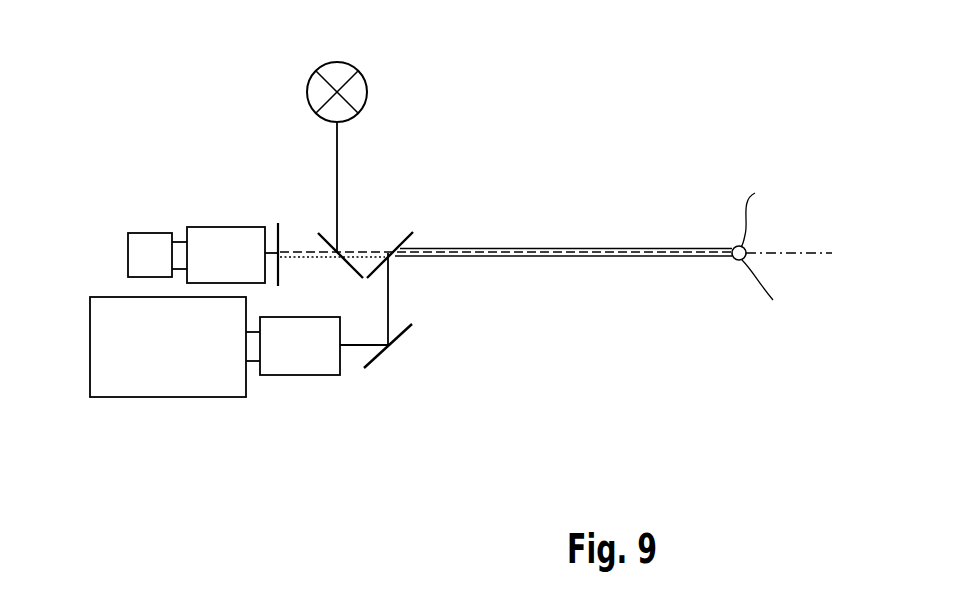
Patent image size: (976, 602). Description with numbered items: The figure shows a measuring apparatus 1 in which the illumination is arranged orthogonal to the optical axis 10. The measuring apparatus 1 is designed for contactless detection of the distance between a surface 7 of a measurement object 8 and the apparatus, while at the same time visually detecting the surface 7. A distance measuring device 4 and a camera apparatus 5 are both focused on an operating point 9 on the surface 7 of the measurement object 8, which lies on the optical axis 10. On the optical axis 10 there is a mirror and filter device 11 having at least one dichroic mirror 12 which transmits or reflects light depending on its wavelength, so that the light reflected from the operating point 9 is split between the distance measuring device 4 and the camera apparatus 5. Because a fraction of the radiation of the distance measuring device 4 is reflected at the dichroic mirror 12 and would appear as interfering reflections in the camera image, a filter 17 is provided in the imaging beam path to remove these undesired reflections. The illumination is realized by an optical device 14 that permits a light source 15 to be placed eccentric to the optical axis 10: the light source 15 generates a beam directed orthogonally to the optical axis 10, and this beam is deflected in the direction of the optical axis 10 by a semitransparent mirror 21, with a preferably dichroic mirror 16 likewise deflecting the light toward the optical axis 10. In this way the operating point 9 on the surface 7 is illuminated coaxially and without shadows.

The measuring apparatus 1 is at (77, 137).
The distance measuring device 4 is at (157, 380).
The camera apparatus 5 is at (152, 243).
The surface 7 is at (747, 207).
The measurement object 8 is at (778, 238).
The operating point 9 is at (740, 260).
The optical axis 10 is at (783, 253).
The mirror and filter device 11 is at (380, 232).
The dichroic mirror 12 is at (405, 237).
The optical device 14 is at (323, 220).
The light source 15 is at (358, 88).
The dichroic mirror 16 is at (377, 357).
The filter 17 is at (277, 223).
The semitransparent mirror 21 is at (350, 268).